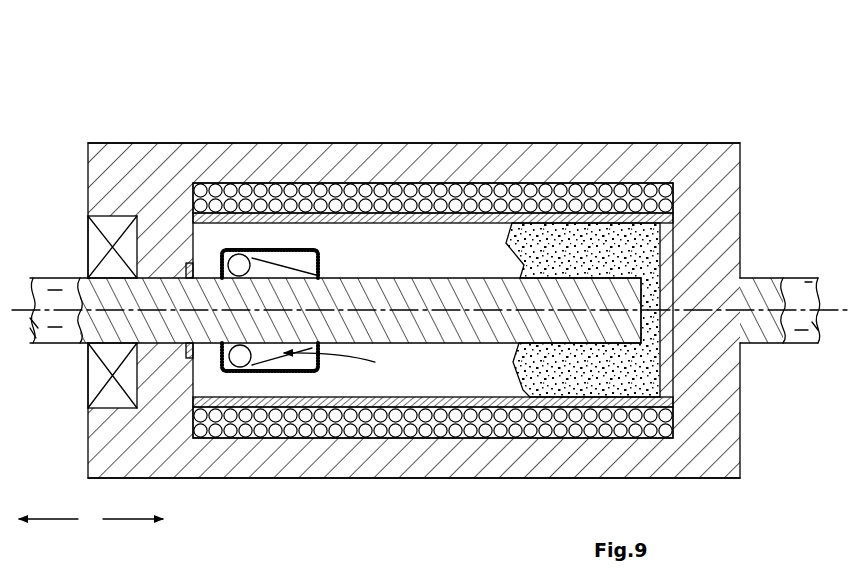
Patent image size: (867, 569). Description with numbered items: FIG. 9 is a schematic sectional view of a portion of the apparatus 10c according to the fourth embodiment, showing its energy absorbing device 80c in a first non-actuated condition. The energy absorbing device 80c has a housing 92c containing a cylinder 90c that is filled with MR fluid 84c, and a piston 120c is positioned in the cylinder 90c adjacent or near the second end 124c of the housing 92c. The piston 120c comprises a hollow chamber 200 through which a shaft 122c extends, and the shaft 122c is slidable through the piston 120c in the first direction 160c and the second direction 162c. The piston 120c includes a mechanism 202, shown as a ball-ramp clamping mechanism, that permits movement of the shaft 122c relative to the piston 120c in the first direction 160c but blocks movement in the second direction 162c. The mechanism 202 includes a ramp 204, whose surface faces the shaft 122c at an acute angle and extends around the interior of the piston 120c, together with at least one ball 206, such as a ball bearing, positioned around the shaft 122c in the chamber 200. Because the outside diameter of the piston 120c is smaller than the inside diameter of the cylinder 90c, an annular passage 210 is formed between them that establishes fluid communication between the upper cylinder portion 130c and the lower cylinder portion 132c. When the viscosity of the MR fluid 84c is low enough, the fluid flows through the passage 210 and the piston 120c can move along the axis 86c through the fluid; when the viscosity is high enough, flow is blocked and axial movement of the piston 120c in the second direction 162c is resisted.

The apparatus 10c is at (104, 103).
The energy absorbing device 80c is at (145, 98).
The housing 92c is at (123, 188).
The second end 124c is at (162, 207).
The ball 206 is at (239, 262).
The piston 120c is at (267, 237).
The hollow chamber 200 is at (275, 270).
The cylinder 90c is at (447, 207).
The MR fluid 84c is at (565, 255).
The shaft 122c is at (50, 298).
The upper cylinder portion 130c is at (207, 365).
The passage 210 is at (273, 387).
The ramp 204 is at (295, 358).
The mechanism 202 is at (349, 364).
The lower cylinder portion 132c is at (609, 374).
The axis 86c is at (745, 312).
The first direction 160c is at (48, 506).
The second direction 162c is at (131, 506).